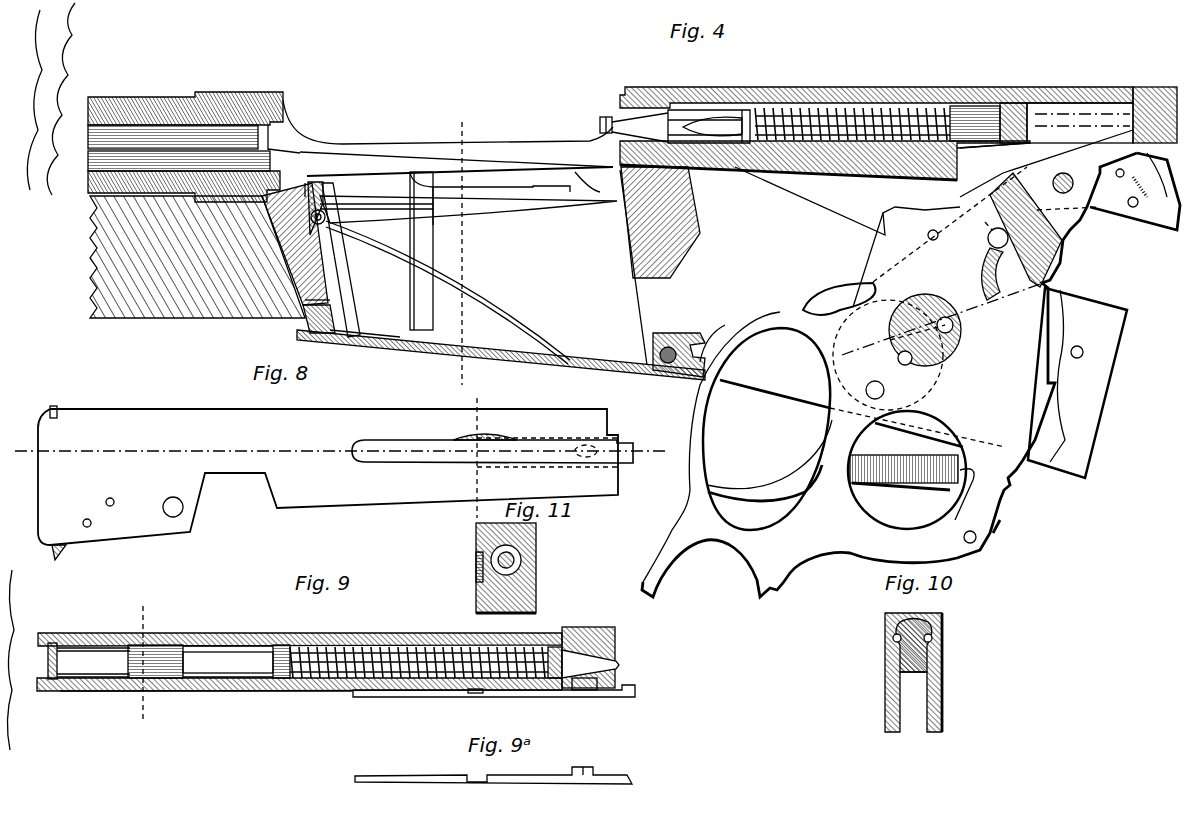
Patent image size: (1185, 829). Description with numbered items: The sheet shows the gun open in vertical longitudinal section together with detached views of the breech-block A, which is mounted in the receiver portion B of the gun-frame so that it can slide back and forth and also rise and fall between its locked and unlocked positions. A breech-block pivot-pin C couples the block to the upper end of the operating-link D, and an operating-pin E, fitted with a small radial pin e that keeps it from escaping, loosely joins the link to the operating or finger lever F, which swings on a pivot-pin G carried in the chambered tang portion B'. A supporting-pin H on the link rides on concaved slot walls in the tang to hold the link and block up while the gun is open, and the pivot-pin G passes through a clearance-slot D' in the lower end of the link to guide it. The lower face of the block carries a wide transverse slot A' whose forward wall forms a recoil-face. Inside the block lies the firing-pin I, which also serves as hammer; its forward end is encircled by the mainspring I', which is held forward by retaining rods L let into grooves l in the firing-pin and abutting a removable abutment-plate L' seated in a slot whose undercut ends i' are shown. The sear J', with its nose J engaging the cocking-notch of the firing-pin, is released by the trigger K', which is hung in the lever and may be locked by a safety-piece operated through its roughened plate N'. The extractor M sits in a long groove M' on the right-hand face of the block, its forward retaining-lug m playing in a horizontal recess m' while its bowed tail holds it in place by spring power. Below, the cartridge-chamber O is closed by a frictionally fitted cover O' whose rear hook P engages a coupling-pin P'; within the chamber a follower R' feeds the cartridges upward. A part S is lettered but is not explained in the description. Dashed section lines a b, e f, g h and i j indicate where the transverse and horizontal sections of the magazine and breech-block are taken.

In FIG. 4, the breech-block A is at (876, 123).
In FIG. 8, the breech-block A is at (328, 477).
In FIG. 11, the breech-block A is at (523, 568).
In FIG. 9, the breech-block A is at (299, 646).
In FIG. 10, the breech-block A is at (898, 672).
In FIG. 4, the wide transverse slot A' is at (991, 157).
In FIG. 4, the receiver portion of the gun-frame B is at (456, 142).
In FIG. 4, the chambered tang portion of the gun-frame B' is at (1077, 383).
In FIG. 4, the breech-block pivot-pin C is at (1066, 168).
In FIG. 4, the operating-link D is at (1046, 208).
In FIG. 4, the clearance-slot D' is at (910, 334).
In FIG. 4, the operating-pin E is at (988, 239).
In FIG. 4, the radial pin e is at (975, 215).
In FIG. 8, the radial pin e is at (336, 450).
In FIG. 4, the operating or finger lever F is at (889, 375).
In FIG. 8, the section line e f is at (672, 453).
In FIG. 4, the operating-lever pivot-pin G is at (885, 392).
In FIG. 4, the supporting-pin H is at (950, 325).
In FIG. 4, the firing-pin I is at (877, 100).
In FIG. 11, the firing-pin I is at (526, 561).
In FIG. 9, the firing-pin I is at (419, 640).
In FIG. 10, the firing-pin I is at (914, 646).
In FIG. 4, the mainspring I' is at (733, 101).
In FIG. 11, the mainspring I' is at (529, 548).
In FIG. 9, the mainspring I' is at (474, 640).
In FIG. 8, the section line i j i is at (476, 449).
In FIG. 9, the undercut ends of abutment-plate slot i' is at (54, 662).
In FIG. 4, the sear nose J is at (1135, 186).
In FIG. 4, the sear J' is at (1150, 175).
In FIG. 4, the trigger K' is at (906, 456).
In FIG. 4, the mainspring-retaining rods L is at (1082, 95).
In FIG. 9, the mainspring-retaining rods L is at (93, 663).
In FIG. 10, the mainspring-retaining rods L is at (912, 637).
In FIG. 8, the abutment-plate L' is at (39, 410).
In FIG. 9, the abutment-plate L' is at (37, 661).
In FIG. 10, the grooves l is at (895, 655).
In FIG. 4, the extractor M is at (631, 111).
In FIG. 8, the extractor M is at (492, 450).
In FIG. 11, the extractor M is at (458, 567).
In FIG. 9, the extractor M is at (494, 703).
In FIG. 9A, the extractor M is at (493, 788).
In FIG. 8, the extractor groove M' is at (371, 479).
In FIG. 11, the extractor groove M' is at (545, 589).
In FIG. 9, the extractor groove M' is at (228, 707).
In FIG. 8, the retaining-lug m is at (572, 451).
In FIG. 9, the retaining-lug m is at (584, 697).
In FIG. 9A, the retaining-lug m is at (584, 759).
In FIG. 9, the horizontal recess m' is at (640, 677).
In FIG. 4, the safety-piece plate N' is at (1027, 494).
In FIG. 4, the cartridge-chamber O is at (501, 355).
In FIG. 4, the cover O' is at (365, 349).
In FIG. 4, the hook P is at (679, 342).
In FIG. 4, the coupling-pin P' is at (644, 349).
In FIG. 4, the follower R' is at (468, 220).
In FIG. 4, the carrier S is at (420, 292).
In FIG. 4, the section line a b a is at (459, 244).
In FIG. 4, the section line a b is at (460, 387).
In FIG. 9, the section line g h g is at (142, 655).
In FIG. 9, the section line g h is at (143, 728).
In FIG. 8, the section line i j is at (475, 525).